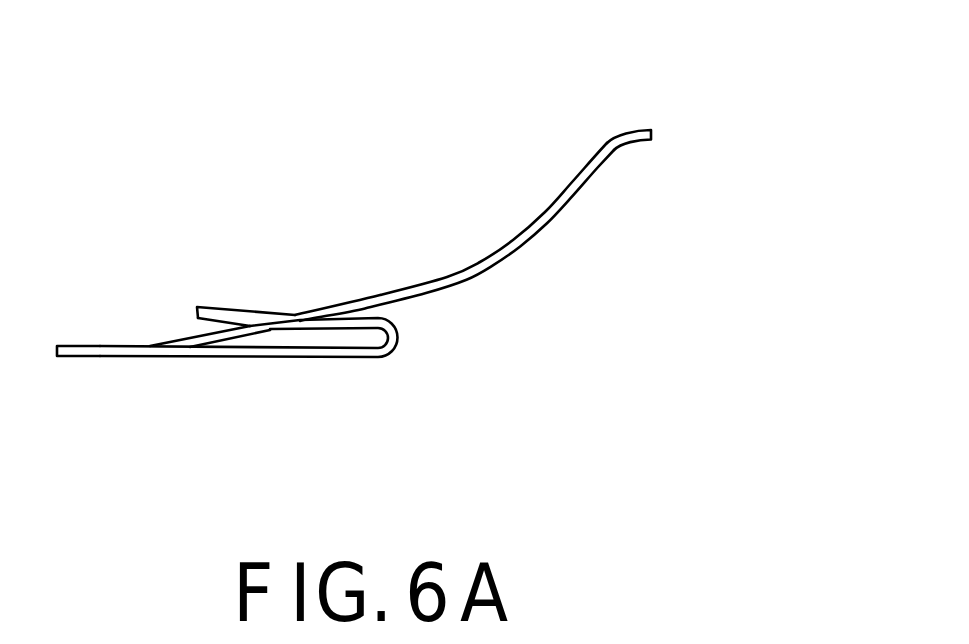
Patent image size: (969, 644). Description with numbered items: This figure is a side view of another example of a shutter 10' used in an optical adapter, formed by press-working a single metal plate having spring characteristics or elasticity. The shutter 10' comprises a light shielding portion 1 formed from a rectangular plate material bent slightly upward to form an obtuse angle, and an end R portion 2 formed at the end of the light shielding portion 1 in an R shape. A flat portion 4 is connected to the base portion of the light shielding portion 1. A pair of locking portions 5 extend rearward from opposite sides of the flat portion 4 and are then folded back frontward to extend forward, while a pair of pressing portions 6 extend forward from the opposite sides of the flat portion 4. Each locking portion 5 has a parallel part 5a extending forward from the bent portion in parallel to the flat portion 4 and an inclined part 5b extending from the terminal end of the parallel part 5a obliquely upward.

The light shielding portion 1 is at (517, 240).
The end R portion 2 is at (628, 128).
The flat portion 4 is at (190, 358).
The locking portion 5 is at (243, 310).
The parallel part 5a is at (308, 358).
The inclined part 5b is at (293, 319).
The pressing portion 6 is at (82, 358).
The shutter 10' is at (739, 234).